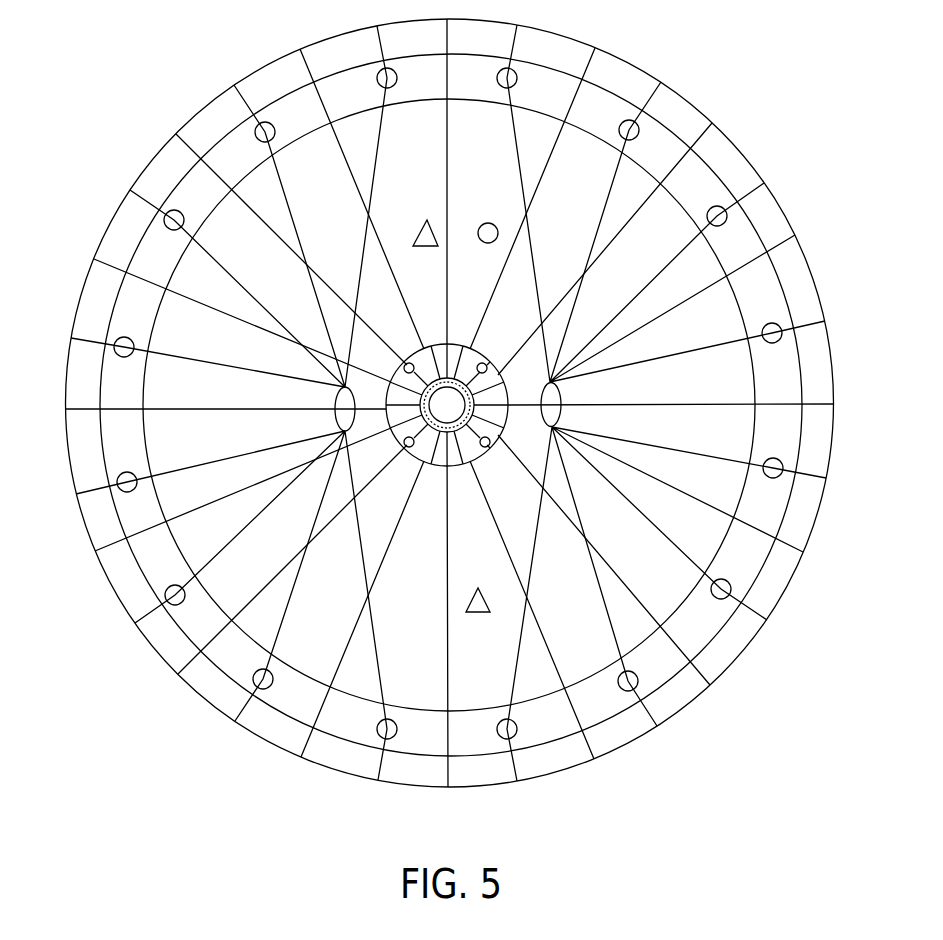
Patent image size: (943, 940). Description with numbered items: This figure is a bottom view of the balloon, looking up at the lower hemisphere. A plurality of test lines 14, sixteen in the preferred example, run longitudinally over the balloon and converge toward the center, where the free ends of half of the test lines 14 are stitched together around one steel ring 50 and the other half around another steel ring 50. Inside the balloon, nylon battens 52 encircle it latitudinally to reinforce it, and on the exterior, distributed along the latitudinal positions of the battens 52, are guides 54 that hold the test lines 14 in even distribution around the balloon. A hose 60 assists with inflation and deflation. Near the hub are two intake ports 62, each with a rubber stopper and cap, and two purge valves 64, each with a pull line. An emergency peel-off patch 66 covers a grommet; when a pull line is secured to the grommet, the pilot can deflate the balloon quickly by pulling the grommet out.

The test lines 14 is at (230, 704).
The steel ring 50 is at (562, 400).
The nylon battens 52 is at (227, 139).
The guides 54 is at (104, 372).
The hose 60 is at (488, 223).
The intake ports 62 is at (409, 362).
The purge valves 64 is at (484, 362).
The emergency peel-off patch 66 is at (416, 242).